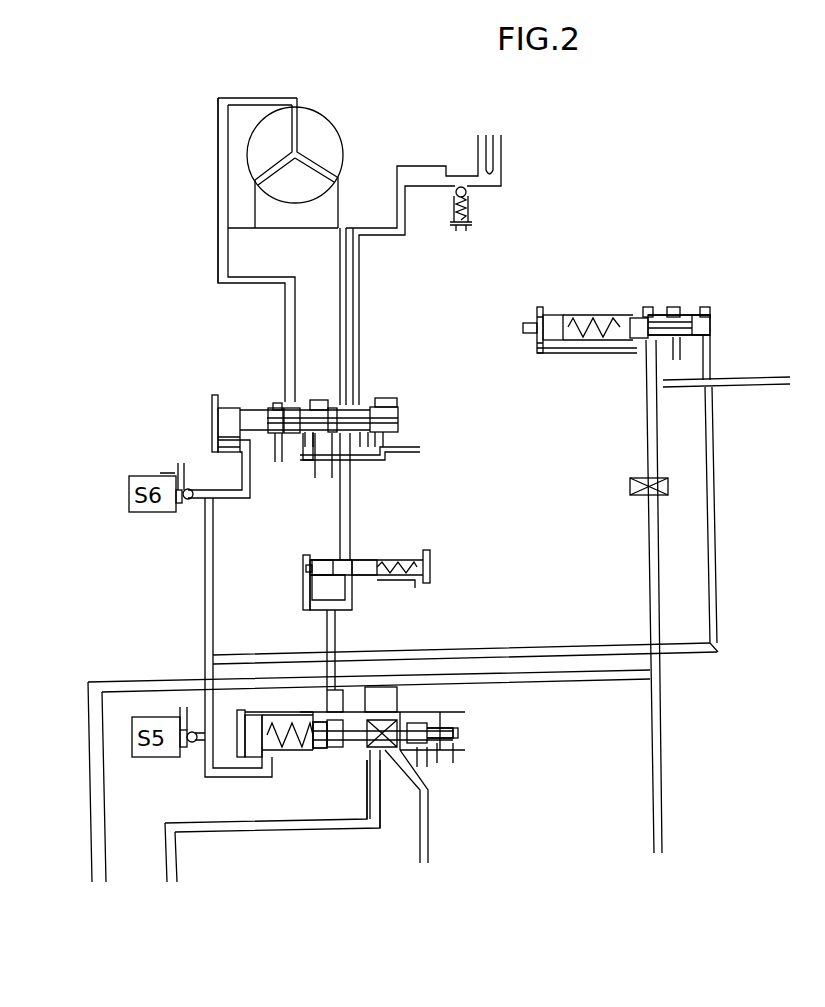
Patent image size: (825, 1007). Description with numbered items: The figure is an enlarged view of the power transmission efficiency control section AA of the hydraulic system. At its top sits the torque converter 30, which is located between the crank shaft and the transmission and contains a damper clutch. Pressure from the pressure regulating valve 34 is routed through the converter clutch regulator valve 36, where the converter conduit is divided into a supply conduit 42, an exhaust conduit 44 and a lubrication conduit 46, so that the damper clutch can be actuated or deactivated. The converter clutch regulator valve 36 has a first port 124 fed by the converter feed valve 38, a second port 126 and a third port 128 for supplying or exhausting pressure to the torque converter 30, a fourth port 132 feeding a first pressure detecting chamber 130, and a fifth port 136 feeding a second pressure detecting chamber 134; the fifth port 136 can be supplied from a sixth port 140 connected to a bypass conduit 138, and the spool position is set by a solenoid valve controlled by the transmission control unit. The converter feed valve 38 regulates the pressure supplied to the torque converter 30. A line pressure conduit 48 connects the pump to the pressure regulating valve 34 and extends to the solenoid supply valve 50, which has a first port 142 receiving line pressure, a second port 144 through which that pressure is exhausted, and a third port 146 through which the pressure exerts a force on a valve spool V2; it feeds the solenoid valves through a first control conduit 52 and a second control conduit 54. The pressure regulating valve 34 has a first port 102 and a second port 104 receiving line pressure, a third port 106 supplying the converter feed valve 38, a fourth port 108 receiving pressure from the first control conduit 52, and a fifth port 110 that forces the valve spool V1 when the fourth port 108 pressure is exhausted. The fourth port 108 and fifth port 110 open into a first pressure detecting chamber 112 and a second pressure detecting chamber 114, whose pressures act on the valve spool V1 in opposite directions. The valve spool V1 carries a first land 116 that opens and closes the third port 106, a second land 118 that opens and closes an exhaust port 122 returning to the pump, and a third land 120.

The torque converter 30 is at (355, 120).
The power transmission efficiency control section AA is at (628, 137).
The supply conduit 42 is at (217, 256).
The exhaust conduit 44 is at (347, 298).
The lubrication conduit 46 is at (360, 262).
The converter clutch regulator valve 36 is at (386, 396).
The first pressure detecting chamber 130 is at (248, 413).
The second port 126 is at (293, 405).
The third port 128 is at (342, 408).
The second pressure detecting chamber 134 is at (398, 405).
The fourth port 132 is at (242, 445).
The sixth port 140 is at (300, 460).
The first port 124 is at (326, 470).
The fifth port 136 is at (385, 452).
The bypass conduit 138 is at (362, 462).
The converter feed valve 38 is at (439, 550).
The solenoid supply valve 50 is at (653, 305).
The valve spool V2 is at (712, 322).
The first port 142 is at (643, 345).
The second port 144 is at (676, 362).
The third port 146 is at (710, 352).
The second control conduit 54 is at (738, 392).
The first control conduit 52 is at (718, 557).
The line pressure conduit 48 is at (142, 680).
The pressure regulating valve 34 is at (476, 756).
The fourth port 108 is at (262, 757).
The first pressure detecting chamber 112 is at (268, 725).
The third port 106 is at (335, 717).
The first port 102 is at (356, 715).
The second port 104 is at (410, 718).
The second pressure detecting chamber 114 is at (440, 712).
The third land 120 is at (480, 712).
The valve spool V1 is at (457, 733).
The first land 116 is at (318, 750).
The second land 118 is at (372, 760).
The fifth port 110 is at (430, 790).
The exhaust port 122 is at (385, 780).